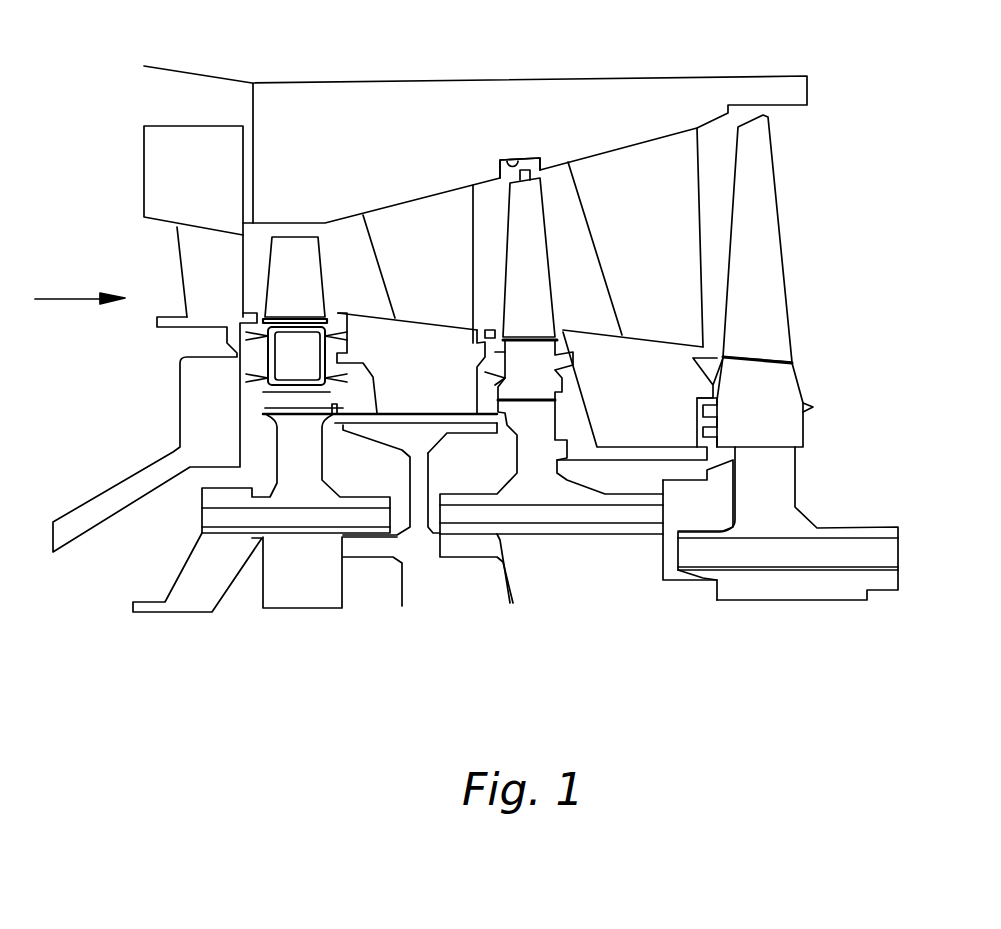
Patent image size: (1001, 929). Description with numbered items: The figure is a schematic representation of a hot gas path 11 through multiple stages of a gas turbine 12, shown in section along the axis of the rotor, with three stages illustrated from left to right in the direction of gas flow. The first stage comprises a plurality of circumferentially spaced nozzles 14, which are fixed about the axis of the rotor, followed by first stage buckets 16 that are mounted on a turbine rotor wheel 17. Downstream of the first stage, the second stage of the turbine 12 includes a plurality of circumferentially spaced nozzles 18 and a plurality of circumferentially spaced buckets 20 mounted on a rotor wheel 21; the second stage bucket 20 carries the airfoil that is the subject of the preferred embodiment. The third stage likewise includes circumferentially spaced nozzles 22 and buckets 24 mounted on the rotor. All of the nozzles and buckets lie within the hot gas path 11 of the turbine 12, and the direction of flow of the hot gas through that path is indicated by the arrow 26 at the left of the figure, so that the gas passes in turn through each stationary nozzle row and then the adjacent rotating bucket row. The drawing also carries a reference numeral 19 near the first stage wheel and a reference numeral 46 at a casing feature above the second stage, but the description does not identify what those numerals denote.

The hot gas path 11 is at (497, 200).
The gas turbine 12 is at (585, 102).
The first stage nozzles 14 is at (200, 270).
The first stage buckets 16 is at (323, 282).
The turbine rotor wheel 17 is at (298, 543).
The second stage nozzles 18 is at (438, 265).
The first stage disk 19 is at (297, 452).
The second stage buckets 20 is at (532, 263).
The rotor wheel 21 is at (537, 457).
The third stage nozzles 22 is at (658, 253).
The third stage buckets 24 is at (765, 248).
The arrow 26 is at (62, 296).
The casing hook 46 is at (507, 150).